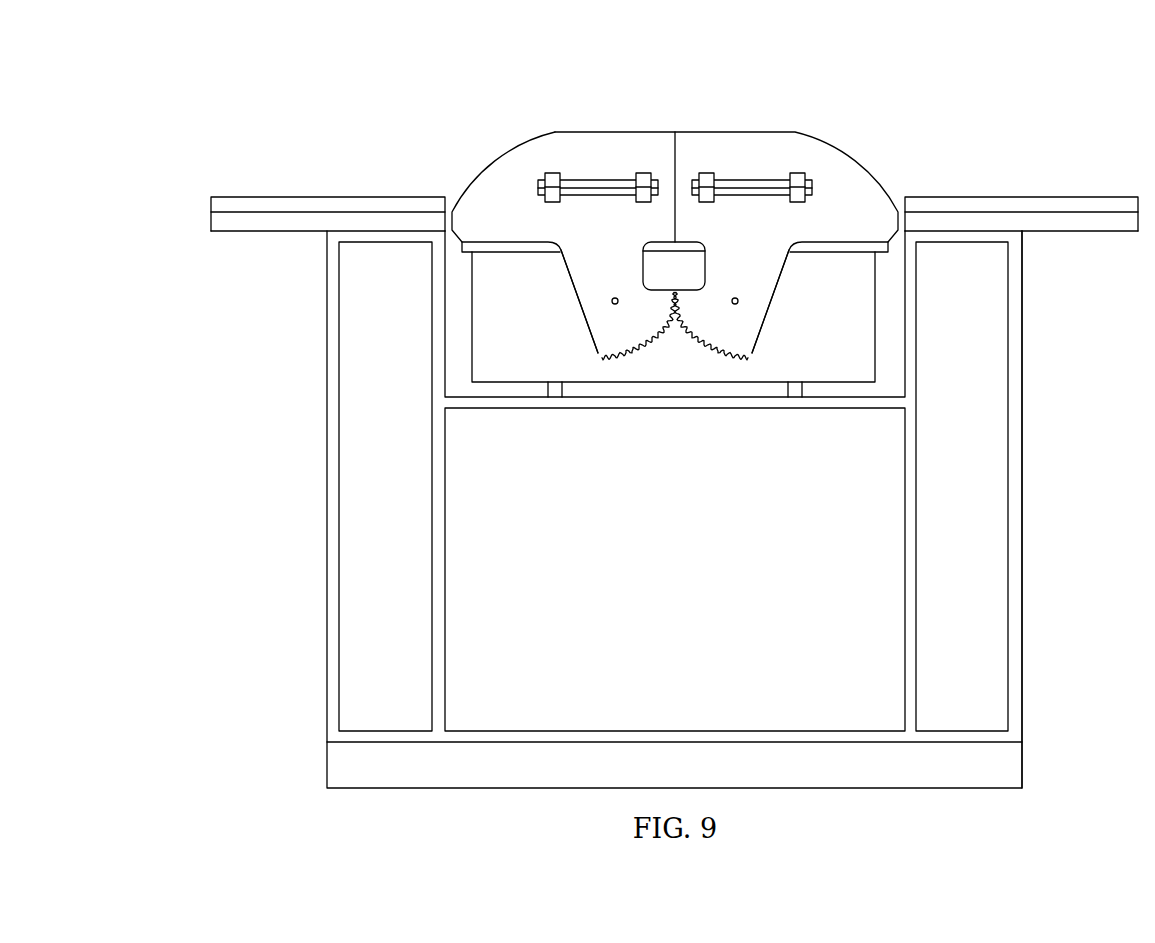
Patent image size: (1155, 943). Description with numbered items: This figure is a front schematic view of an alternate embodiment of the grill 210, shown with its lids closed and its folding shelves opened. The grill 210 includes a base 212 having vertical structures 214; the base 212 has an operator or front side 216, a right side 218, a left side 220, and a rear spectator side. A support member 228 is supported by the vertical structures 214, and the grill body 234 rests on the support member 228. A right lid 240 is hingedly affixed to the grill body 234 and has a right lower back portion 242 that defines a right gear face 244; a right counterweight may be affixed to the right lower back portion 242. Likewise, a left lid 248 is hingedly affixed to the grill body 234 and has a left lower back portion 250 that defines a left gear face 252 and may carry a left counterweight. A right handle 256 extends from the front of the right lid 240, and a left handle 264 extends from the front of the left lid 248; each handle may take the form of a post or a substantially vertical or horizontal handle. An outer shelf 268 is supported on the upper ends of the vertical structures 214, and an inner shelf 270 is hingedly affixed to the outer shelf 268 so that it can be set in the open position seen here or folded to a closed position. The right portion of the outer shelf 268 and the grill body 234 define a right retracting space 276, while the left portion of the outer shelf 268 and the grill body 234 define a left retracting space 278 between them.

The grill 210 is at (436, 86).
The base 212 is at (258, 570).
The vertical structures 214 is at (365, 491).
The front side 216 is at (657, 584).
The right side 218 is at (1027, 654).
The left side 220 is at (322, 654).
The support member 228 is at (612, 408).
The grill body 234 is at (464, 328).
The right lid 240 is at (846, 150).
The right lower back portion 242 is at (770, 287).
The right gear face 244 is at (747, 359).
The left lid 248 is at (503, 150).
The left lower back portion 250 is at (580, 287).
The left gear face 252 is at (603, 359).
The right handle 256 is at (752, 200).
The left handle 264 is at (598, 200).
The outer shelf 268 is at (270, 233).
The inner shelf 270 is at (255, 196).
The right retracting space 276 is at (901, 193).
The left retracting space 278 is at (449, 193).